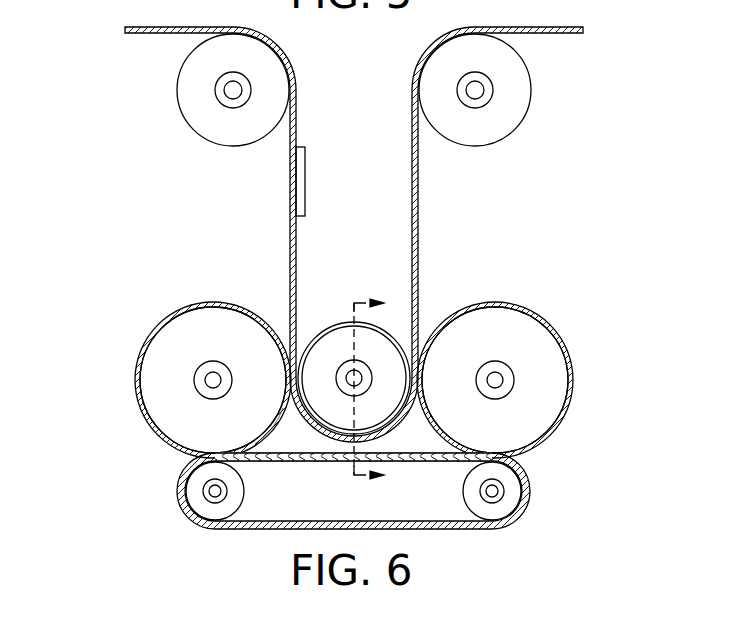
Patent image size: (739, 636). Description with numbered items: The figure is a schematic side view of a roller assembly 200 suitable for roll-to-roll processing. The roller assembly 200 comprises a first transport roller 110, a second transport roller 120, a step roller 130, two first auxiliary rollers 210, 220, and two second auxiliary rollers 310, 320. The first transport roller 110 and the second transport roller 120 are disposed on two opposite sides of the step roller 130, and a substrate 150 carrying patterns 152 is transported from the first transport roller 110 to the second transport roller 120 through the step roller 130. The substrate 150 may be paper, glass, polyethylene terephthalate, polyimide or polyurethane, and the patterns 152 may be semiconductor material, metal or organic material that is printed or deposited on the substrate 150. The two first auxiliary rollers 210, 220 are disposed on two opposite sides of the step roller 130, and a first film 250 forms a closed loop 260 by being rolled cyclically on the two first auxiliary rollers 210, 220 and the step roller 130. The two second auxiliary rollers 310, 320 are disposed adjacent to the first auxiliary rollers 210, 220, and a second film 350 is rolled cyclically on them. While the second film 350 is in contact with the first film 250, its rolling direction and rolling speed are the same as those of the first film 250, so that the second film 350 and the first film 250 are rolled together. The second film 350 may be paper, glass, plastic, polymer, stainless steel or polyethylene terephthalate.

The first transport roller 110 is at (192, 87).
The second transport roller 120 is at (515, 87).
The step roller 130 is at (380, 353).
The substrate 150 is at (165, 27).
The patterns 152 is at (305, 188).
The roller assembly 200 is at (712, 534).
The first auxiliary roller 210 is at (162, 378).
The first auxiliary roller 220 is at (548, 385).
The first film 250 is at (178, 308).
The closed loop 260 is at (295, 440).
The second auxiliary roller 310 is at (193, 492).
The second auxiliary roller 320 is at (505, 496).
The second film 350 is at (243, 525).